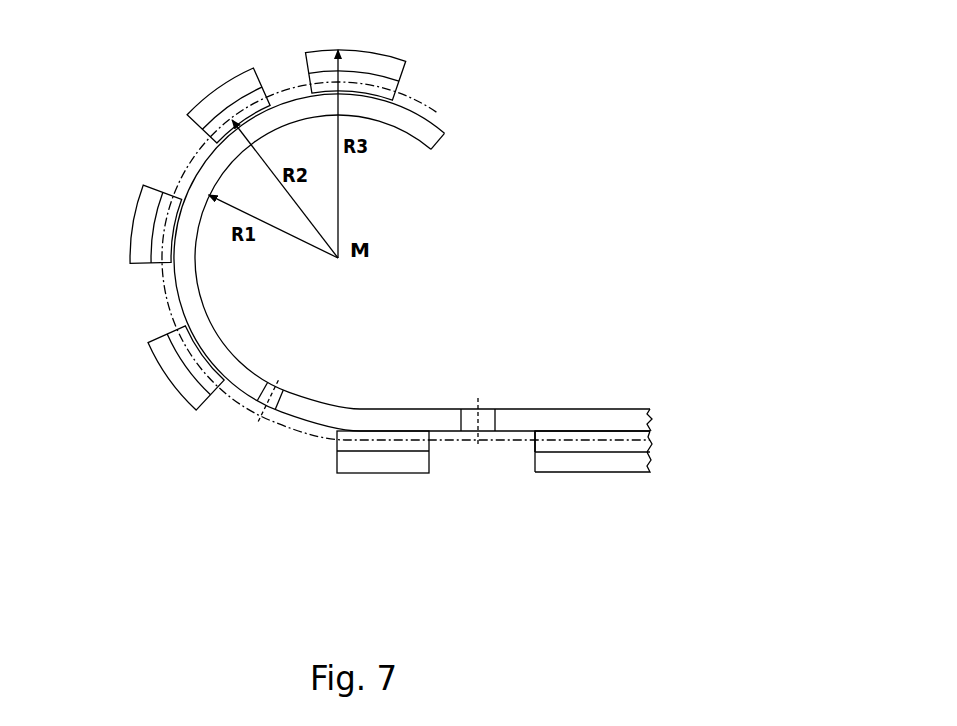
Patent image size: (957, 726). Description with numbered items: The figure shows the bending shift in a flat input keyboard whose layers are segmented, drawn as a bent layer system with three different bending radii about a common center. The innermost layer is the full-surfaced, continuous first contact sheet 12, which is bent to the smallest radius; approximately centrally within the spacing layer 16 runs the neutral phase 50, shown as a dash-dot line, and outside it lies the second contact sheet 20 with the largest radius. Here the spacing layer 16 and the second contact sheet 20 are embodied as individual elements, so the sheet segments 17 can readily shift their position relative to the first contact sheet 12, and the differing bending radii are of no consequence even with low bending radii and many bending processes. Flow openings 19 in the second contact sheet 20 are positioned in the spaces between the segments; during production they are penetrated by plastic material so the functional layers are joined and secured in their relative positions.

The first contact sheet 12 is at (611, 410).
The spacing layer 16 is at (535, 448).
The sheet segments 17 is at (203, 97).
The flow openings 19 is at (285, 395).
The second contact sheet 20 is at (581, 468).
The neutral phase 50 is at (307, 443).